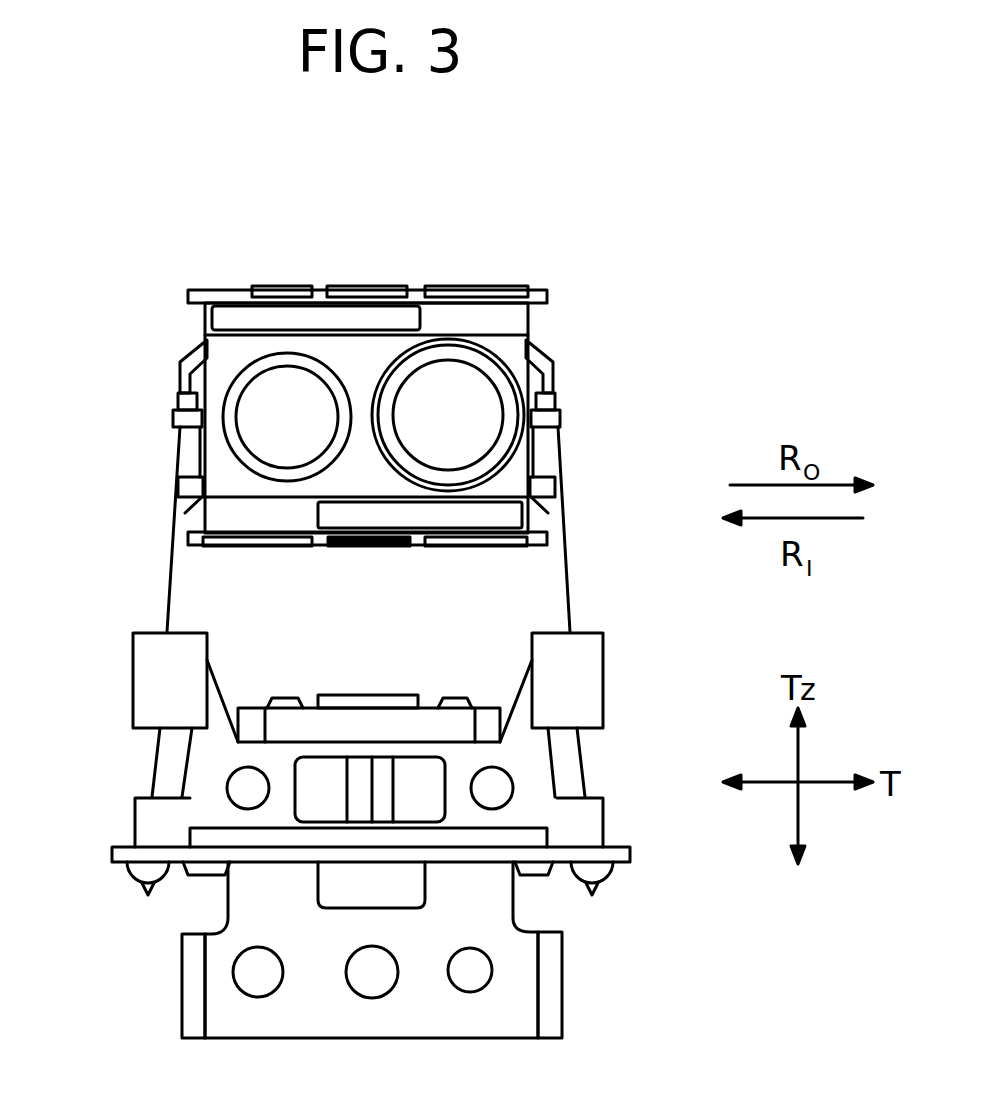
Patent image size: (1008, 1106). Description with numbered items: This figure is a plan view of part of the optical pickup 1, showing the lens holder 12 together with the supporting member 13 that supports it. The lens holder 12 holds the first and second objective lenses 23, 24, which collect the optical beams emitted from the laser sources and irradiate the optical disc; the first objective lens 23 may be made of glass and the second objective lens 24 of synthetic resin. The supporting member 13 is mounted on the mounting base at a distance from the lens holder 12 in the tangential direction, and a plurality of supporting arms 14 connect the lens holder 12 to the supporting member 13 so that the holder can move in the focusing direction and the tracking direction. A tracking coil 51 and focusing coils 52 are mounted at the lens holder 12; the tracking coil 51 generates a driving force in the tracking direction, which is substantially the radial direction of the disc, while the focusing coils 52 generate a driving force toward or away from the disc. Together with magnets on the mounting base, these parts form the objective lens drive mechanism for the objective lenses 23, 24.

The optical pickup 1 is at (114, 182).
The lens holder 12 is at (526, 302).
The supporting member 13 is at (598, 812).
The supporting arms 14 is at (170, 566).
The first objective lens 23 is at (257, 403).
The second objective lens 24 is at (478, 403).
The tracking coil 51 is at (364, 290).
The focusing coil 52 is at (250, 292).